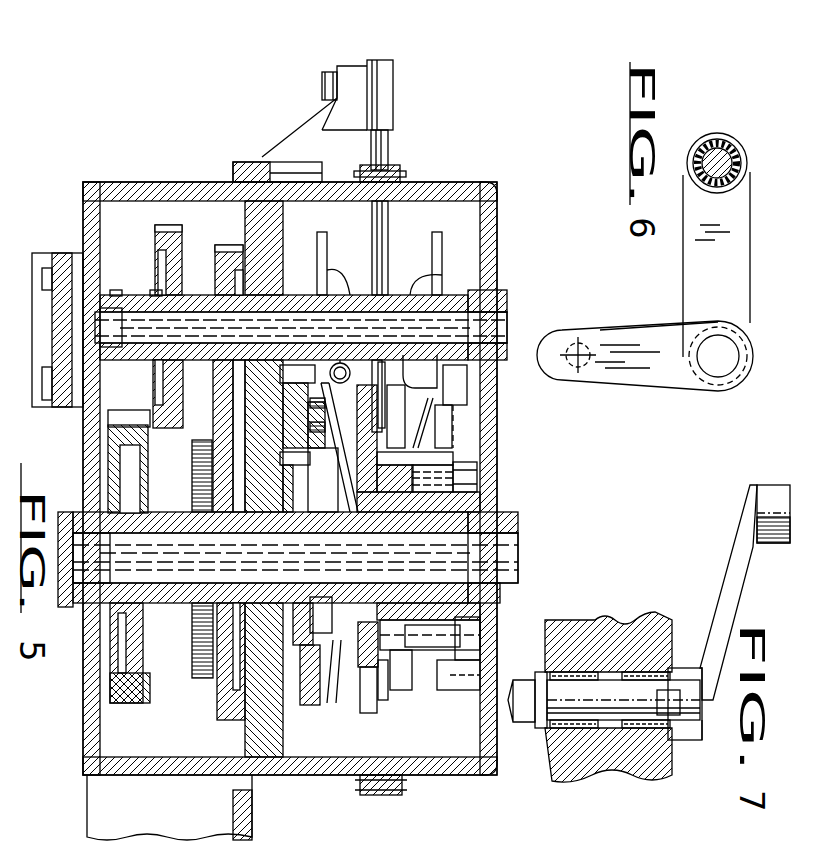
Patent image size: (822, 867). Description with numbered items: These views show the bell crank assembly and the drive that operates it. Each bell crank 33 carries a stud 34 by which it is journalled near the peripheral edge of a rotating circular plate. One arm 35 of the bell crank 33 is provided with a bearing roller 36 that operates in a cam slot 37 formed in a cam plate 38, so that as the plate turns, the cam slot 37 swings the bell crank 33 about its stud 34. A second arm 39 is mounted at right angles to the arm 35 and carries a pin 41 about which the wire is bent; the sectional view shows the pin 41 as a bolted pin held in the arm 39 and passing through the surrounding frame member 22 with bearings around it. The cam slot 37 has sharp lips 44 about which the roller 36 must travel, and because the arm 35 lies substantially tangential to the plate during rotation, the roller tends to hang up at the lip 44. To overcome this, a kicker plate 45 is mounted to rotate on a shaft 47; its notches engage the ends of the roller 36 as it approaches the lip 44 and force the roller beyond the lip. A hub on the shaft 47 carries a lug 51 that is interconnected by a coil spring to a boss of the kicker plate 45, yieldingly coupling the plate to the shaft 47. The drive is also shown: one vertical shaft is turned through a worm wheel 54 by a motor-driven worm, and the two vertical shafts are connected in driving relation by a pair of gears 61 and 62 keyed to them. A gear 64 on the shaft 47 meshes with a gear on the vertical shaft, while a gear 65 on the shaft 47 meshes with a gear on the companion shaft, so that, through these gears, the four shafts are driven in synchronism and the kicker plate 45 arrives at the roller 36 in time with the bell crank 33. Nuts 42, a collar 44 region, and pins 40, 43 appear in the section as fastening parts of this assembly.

In FIG. 7, the frame member 22 is at (603, 630).
In FIG. 6, the bell crank 33 is at (627, 378).
In FIG. 7, the bell crank 33 is at (685, 704).
In FIG. 6, the stud 34 is at (708, 380).
In FIG. 7, the stud 34 is at (548, 690).
In FIG. 6, the arm 35 is at (684, 268).
In FIG. 7, the arm 35 is at (725, 600).
In FIG. 6, the bearing roller 36 is at (745, 145).
In FIG. 7, the bearing roller 36 is at (772, 490).
In FIG. 5, the cam slot 37 is at (372, 618).
In FIG. 5, the cam plate 38 is at (338, 690).
In FIG. 6, the arm 39 is at (616, 330).
In FIG. 7, the arm 39 is at (700, 738).
In FIG. 5, the pin 40 is at (330, 703).
In FIG. 5, the pin 41 is at (412, 700).
In FIG. 6, the pin 41 is at (580, 372).
In FIG. 7, the pin 41 is at (668, 690).
In FIG. 5, the nut 42 is at (468, 662).
In FIG. 5, the control shaft 43 is at (388, 146).
In FIG. 5, the lip 44 is at (372, 690).
In FIG. 5, the kicker plate 45 is at (425, 662).
In FIG. 5, the shaft 47 is at (509, 325).
In FIG. 5, the lug 51 is at (514, 552).
In FIG. 5, the worm wheel 54 is at (192, 630).
In FIG. 5, the gear 61 is at (130, 703).
In FIG. 5, the gear 62 is at (220, 703).
In FIG. 5, the gear 64 is at (222, 248).
In FIG. 5, the gear 65 is at (156, 240).